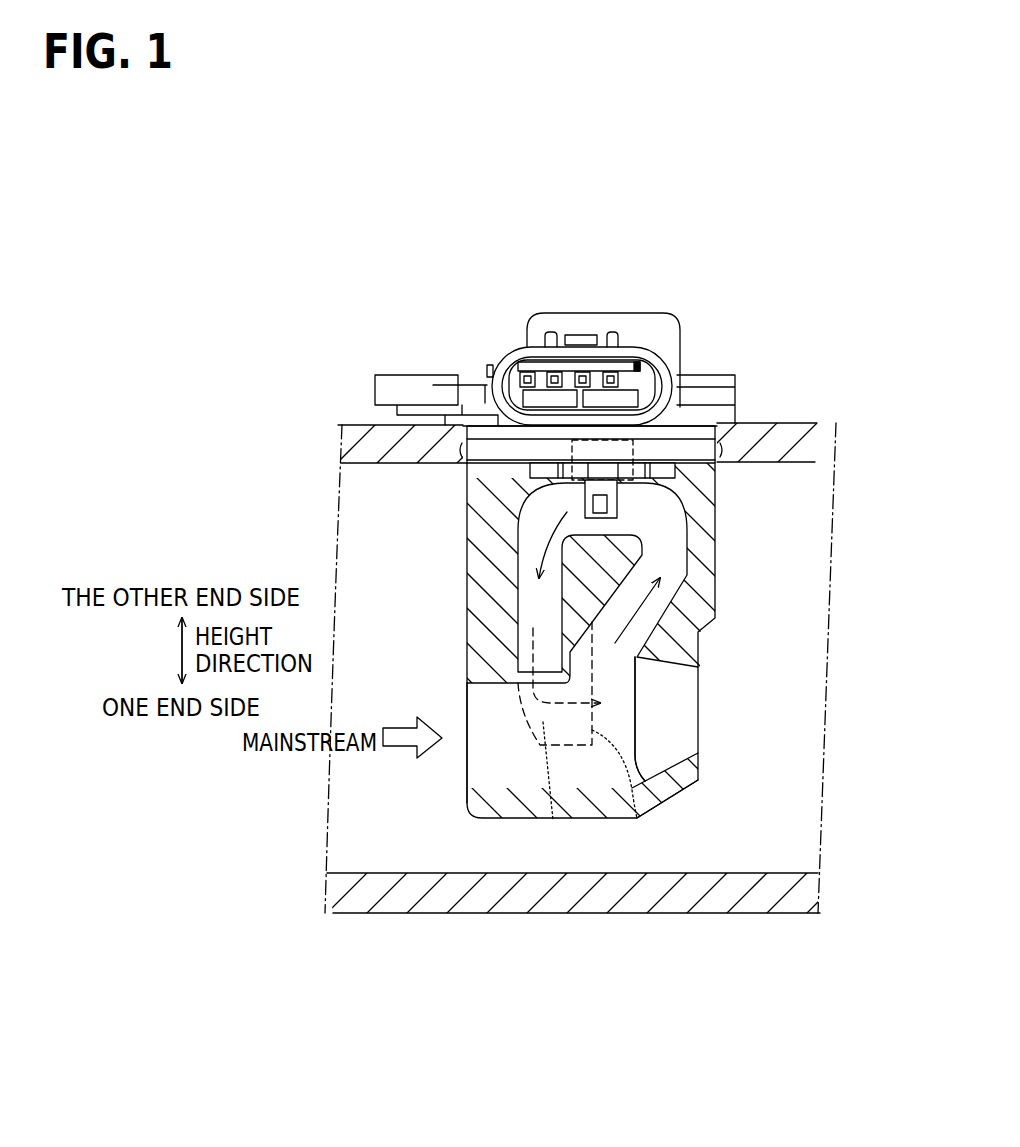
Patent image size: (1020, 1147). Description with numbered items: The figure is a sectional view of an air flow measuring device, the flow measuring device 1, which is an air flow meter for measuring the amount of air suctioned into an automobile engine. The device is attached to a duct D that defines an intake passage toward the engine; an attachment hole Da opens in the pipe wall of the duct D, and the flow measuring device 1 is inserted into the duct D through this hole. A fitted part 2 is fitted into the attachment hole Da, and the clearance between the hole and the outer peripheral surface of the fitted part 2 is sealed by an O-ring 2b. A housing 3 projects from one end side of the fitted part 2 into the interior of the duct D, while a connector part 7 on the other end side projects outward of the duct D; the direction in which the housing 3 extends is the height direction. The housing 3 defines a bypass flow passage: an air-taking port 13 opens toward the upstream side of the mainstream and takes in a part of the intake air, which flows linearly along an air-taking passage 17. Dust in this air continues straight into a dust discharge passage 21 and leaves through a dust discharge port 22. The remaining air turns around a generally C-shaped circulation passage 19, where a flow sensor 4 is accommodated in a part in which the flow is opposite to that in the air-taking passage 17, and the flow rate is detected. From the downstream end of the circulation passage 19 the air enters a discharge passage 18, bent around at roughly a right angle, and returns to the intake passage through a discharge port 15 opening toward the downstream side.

The flow measuring device 1 is at (716, 273).
The fitted part 2 is at (468, 438).
The O-ring 2b is at (717, 450).
The housing 3 is at (702, 630).
The flow sensor 4 is at (607, 507).
The connector part 7 is at (678, 358).
The air-taking port 13 is at (466, 758).
The discharge port 15 is at (637, 818).
The air-taking passage 17 is at (487, 703).
The discharge passage 18 is at (553, 820).
The circulation passage 19 is at (663, 588).
The dust discharge passage 21 is at (677, 732).
The dust discharge port 22 is at (700, 717).
The duct D is at (782, 440).
The attachment hole Da is at (703, 428).